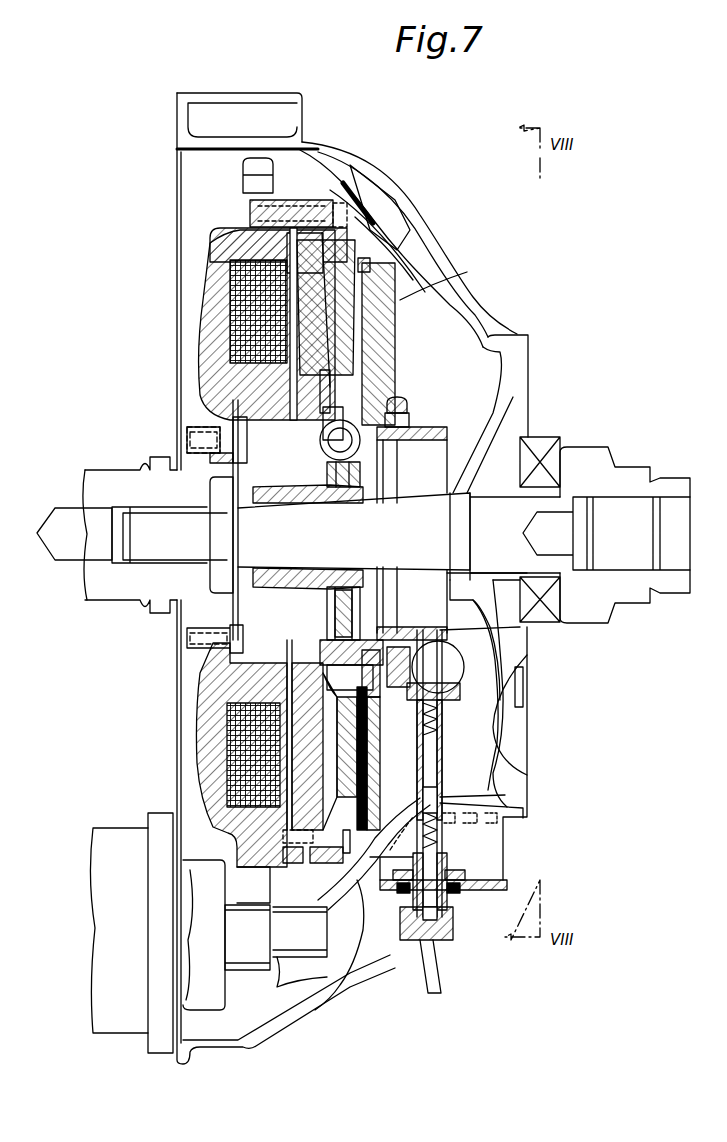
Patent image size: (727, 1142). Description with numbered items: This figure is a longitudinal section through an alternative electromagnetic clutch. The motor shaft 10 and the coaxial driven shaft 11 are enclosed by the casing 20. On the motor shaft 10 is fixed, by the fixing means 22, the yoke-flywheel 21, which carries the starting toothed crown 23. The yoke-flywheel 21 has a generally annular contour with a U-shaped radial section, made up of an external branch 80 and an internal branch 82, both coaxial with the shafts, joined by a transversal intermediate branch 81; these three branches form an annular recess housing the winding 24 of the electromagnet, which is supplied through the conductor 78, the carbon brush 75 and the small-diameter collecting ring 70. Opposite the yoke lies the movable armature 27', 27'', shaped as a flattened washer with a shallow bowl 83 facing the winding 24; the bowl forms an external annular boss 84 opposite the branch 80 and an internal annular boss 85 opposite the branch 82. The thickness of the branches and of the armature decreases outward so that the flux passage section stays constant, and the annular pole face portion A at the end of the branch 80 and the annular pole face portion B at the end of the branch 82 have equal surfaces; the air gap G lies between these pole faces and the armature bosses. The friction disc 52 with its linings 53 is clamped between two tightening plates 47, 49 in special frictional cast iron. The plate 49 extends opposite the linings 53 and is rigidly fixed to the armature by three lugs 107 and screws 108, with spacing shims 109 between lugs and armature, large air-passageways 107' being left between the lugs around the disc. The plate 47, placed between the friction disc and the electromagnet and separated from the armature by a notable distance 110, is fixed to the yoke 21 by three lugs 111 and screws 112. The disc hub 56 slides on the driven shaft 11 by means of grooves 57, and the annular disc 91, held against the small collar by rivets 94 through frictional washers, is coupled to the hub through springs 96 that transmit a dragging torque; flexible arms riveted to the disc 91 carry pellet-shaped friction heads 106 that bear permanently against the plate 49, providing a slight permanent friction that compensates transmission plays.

The motor shaft 10 is at (117, 470).
The driven shaft 11 is at (603, 467).
The casing 20 is at (488, 340).
The yoke-flywheel 21 is at (140, 333).
The means for fixing the yoke on the shaft 22 is at (185, 437).
The starting toothed crown 23 is at (258, 162).
The winding 24 is at (230, 353).
The armature 27' is at (314, 405).
The armature 27'' is at (276, 923).
The tightening plate 47 is at (400, 227).
The tightening plate 49 is at (390, 350).
The friction disc 52 is at (400, 318).
The linings 53 is at (447, 278).
The hub 56 is at (298, 578).
The grooves 57 is at (284, 497).
The collecting ring of small diameter 70 is at (417, 437).
The carbon brush 75 is at (427, 670).
The conductor 78 is at (437, 975).
The external branch 80 is at (237, 247).
The intermediate branch 81 is at (210, 280).
The internal branch 82 is at (259, 412).
The shallow bowl 83 is at (165, 305).
The external annular boss 84 is at (292, 222).
The internal annular boss 85 is at (318, 428).
The disc 91 is at (357, 613).
The rivets 94 is at (320, 648).
The spring 96 is at (354, 452).
The pellet-shaped head 106 is at (387, 397).
The lugs 107 is at (330, 857).
The air-passageways 107' is at (387, 546).
The screws 108 is at (357, 872).
The spacing shims 109 is at (308, 862).
The notable distance 110 is at (400, 267).
The lugs 111 is at (317, 200).
The screws 112 is at (355, 197).
The annular pole face portion A is at (170, 250).
The annular pole face portion B is at (160, 390).
The air gap G is at (295, 340).